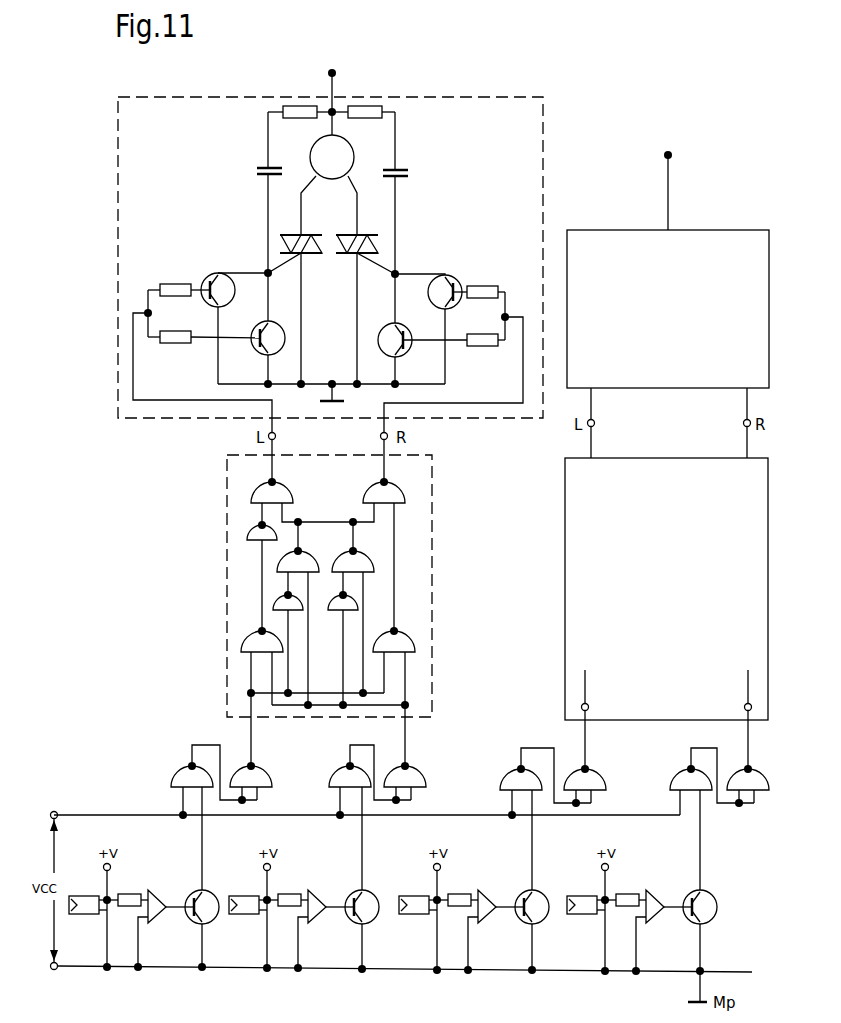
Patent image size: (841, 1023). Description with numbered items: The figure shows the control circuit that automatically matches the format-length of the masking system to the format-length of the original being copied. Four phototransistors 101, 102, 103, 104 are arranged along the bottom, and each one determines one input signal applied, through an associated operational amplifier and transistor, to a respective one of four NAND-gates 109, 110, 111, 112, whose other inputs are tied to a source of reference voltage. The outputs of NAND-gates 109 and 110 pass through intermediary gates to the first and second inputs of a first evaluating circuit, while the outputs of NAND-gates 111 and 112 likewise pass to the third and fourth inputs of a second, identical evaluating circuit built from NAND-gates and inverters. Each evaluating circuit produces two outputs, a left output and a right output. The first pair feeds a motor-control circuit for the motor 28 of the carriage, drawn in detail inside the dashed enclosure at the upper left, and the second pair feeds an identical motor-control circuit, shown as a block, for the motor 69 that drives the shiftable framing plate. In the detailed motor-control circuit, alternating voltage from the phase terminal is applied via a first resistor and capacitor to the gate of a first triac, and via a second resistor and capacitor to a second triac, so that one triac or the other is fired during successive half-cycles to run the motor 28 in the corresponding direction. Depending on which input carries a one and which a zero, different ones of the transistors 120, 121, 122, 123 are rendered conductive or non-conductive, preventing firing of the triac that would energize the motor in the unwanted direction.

The motor 28 is at (329, 175).
The motor 69 is at (777, 313).
The phototransistor 101 is at (95, 916).
The phototransistor 102 is at (255, 916).
The phototransistor 103 is at (425, 916).
The phototransistor 104 is at (593, 916).
The NAND-gate 109 is at (187, 768).
The NAND-gate 110 is at (345, 768).
The NAND-gate 111 is at (517, 771).
The NAND-gate 112 is at (685, 772).
The transistor 120 is at (258, 303).
The transistor 121 is at (282, 332).
The transistor 122 is at (378, 332).
The transistor 123 is at (438, 314).